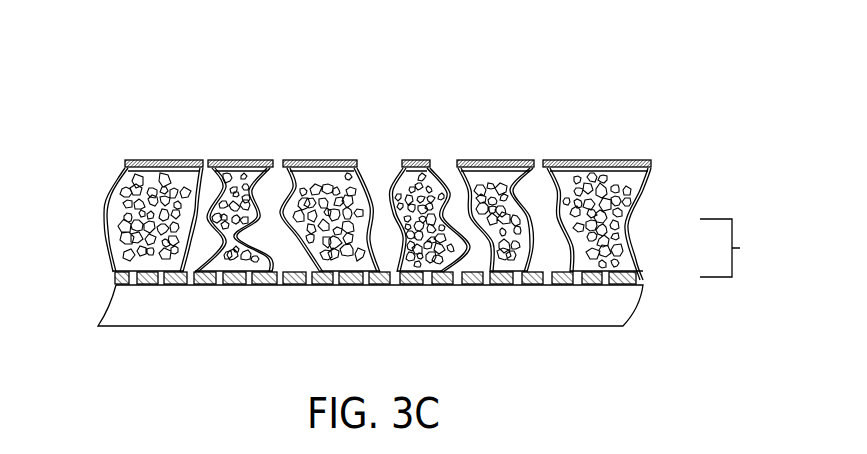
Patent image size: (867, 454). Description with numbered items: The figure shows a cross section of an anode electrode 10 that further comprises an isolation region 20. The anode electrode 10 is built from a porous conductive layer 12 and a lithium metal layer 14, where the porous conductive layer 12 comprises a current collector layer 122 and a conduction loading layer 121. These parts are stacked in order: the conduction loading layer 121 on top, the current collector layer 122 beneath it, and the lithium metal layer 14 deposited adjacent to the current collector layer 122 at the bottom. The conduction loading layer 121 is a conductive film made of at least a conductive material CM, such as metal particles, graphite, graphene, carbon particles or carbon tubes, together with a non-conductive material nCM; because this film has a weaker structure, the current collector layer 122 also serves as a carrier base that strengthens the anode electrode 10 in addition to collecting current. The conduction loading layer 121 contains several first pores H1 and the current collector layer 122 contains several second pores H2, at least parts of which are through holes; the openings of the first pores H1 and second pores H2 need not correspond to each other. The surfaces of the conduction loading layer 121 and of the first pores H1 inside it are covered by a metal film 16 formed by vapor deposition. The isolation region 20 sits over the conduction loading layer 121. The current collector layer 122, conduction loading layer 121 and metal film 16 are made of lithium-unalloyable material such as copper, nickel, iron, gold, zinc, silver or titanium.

The anode electrode 10 is at (152, 128).
The porous conductive layer 12 is at (732, 248).
The conduction loading layer 121 is at (628, 219).
The current collector layer 122 is at (645, 283).
The lithium metal layer 14 is at (633, 311).
The metal film 16 is at (641, 180).
The isolation region 20 is at (652, 164).
The first pores H1 is at (540, 165).
The second pores H2 is at (190, 286).
The conductive material CM is at (118, 233).
The non-conductive material nCM is at (124, 262).